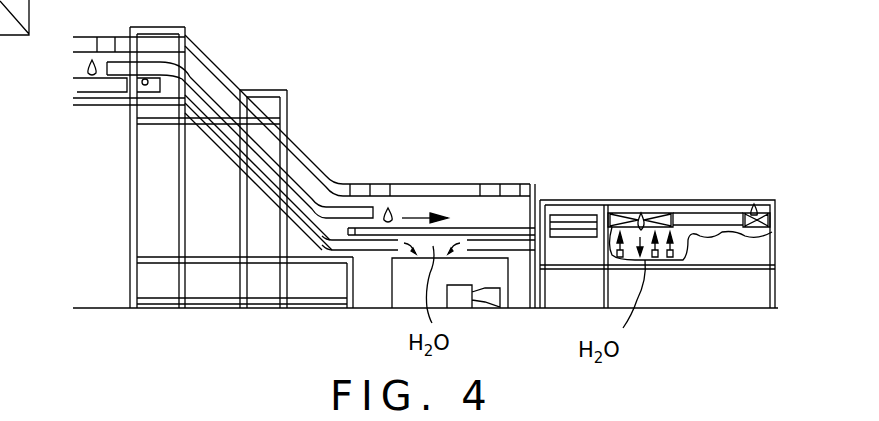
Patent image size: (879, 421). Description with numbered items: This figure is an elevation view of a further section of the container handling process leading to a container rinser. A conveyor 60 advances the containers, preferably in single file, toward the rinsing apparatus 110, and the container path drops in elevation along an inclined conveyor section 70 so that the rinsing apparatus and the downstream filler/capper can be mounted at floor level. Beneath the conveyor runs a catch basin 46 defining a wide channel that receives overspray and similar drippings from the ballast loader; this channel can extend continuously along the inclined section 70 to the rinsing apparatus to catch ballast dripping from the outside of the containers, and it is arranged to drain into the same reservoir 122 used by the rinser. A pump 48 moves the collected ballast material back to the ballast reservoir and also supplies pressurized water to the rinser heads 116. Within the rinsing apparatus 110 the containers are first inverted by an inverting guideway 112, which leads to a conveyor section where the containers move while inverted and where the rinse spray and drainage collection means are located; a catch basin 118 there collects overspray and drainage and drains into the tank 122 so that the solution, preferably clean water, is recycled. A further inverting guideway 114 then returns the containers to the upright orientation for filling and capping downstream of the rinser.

The catch basin 46 is at (85, 98).
The pump 48 is at (458, 297).
The conveyor 60 is at (83, 79).
The inclined conveyor section 70 is at (287, 146).
The rinsing apparatus 110 is at (640, 170).
The inverting guideway 112 is at (620, 212).
The further inverting guideway 114 is at (753, 210).
The rinser heads 116 is at (673, 260).
The catch basin 118 is at (510, 250).
The reservoir 122 is at (402, 294).